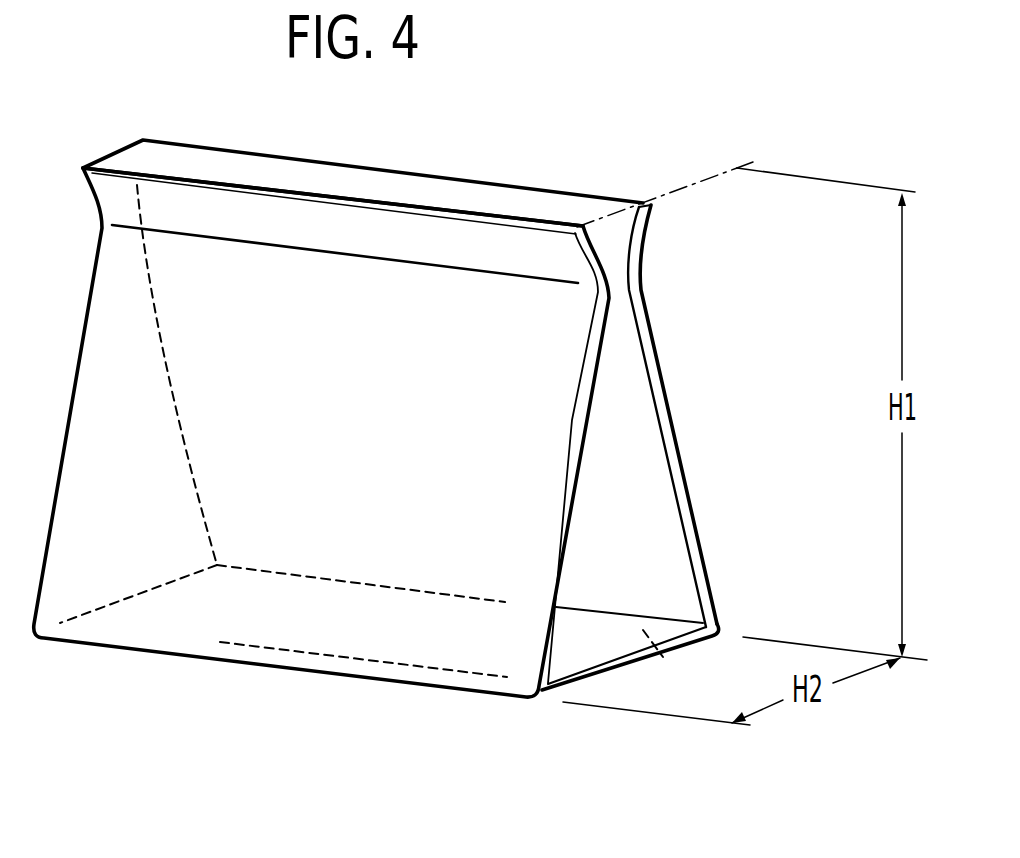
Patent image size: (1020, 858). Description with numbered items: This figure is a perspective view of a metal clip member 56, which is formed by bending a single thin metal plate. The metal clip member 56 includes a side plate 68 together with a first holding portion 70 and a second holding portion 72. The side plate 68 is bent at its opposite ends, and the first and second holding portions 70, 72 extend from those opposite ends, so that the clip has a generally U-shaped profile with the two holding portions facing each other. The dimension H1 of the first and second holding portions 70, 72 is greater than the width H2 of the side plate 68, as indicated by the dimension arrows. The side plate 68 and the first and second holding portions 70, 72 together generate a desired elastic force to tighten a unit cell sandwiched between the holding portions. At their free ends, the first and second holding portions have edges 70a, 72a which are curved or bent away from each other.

The metal clip member 56 is at (619, 115).
The side plate 68 is at (665, 657).
The first holding portion 70 is at (657, 383).
The edge of first holding portion 70a is at (510, 206).
The second holding portion 72 is at (378, 532).
The edge of second holding portion 72a is at (333, 218).